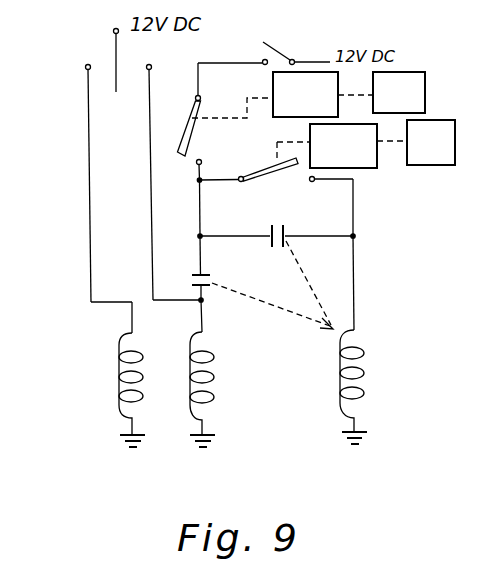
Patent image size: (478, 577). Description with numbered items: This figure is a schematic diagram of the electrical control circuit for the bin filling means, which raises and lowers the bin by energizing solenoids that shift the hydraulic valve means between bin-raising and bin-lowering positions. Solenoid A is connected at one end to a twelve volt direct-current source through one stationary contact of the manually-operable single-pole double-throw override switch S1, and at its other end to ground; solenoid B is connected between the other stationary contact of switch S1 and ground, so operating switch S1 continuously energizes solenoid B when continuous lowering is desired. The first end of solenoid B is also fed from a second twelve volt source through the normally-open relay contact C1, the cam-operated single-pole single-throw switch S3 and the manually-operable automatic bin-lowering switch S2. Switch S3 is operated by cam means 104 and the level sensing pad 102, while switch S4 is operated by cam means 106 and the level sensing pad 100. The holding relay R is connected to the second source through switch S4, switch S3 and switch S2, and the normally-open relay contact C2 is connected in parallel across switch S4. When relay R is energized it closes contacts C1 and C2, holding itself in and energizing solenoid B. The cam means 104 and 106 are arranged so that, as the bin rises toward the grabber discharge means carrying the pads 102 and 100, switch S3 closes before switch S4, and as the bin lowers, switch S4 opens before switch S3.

The manually-operable single-pole double-throw override switch S1 is at (115, 43).
The manually-operable single-pole single-throw automatic bin-lowering switch S2 is at (277, 50).
The cam-operated single-pole single-throw switch S3 is at (189, 124).
The cam-operated single-pole single-throw switch S4 is at (270, 172).
The normally-open relay contact C1 is at (214, 240).
The normally-open relay contact C2 is at (277, 219).
The solenoid A is at (119, 340).
The solenoid B is at (190, 340).
The holding relay R is at (341, 380).
The level sensing and deflecting pad 100 is at (431, 142).
The level sensing and deflecting pad 102 is at (399, 92).
The cam means 104 is at (284, 119).
The cam means 106 is at (372, 168).